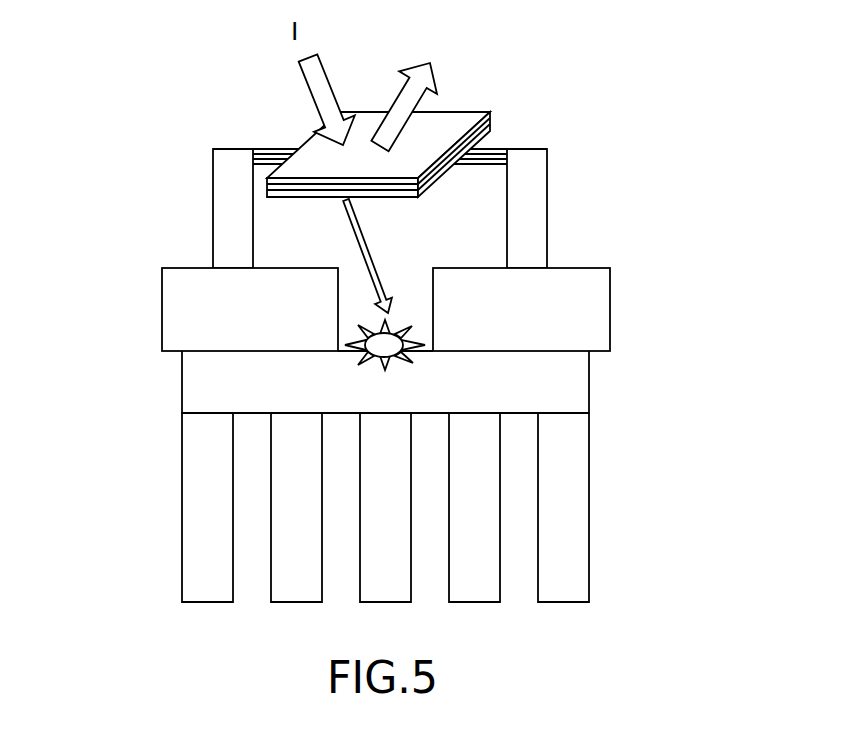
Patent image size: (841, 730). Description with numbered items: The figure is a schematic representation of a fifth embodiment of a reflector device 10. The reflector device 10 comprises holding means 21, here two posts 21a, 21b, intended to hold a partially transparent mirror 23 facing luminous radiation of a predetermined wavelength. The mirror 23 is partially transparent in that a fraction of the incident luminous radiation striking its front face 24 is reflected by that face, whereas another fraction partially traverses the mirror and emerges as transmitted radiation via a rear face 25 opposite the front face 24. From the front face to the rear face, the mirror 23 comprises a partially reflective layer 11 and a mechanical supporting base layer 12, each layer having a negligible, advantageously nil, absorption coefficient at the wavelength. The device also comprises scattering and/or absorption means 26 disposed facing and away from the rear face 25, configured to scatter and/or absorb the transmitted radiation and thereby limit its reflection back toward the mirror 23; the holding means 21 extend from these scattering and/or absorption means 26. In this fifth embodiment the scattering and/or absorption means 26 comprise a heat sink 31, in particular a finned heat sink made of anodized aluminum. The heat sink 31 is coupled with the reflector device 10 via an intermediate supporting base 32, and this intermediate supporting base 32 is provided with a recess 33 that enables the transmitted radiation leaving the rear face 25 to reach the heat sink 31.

The reflector device 10 is at (98, 118).
The partially reflective layer 11 is at (367, 118).
The mechanical supporting base layer 12 is at (407, 195).
The holding means 21 is at (378, 208).
The post 21a is at (223, 253).
The post 21b is at (535, 255).
The partially transparent mirror 23 is at (318, 144).
The front face 24 is at (350, 133).
The rear face 25 is at (418, 194).
The scattering and/or absorption means 26 is at (195, 382).
The heat sink 31 is at (195, 471).
The intermediate supporting base 32 is at (177, 322).
The recess 33 is at (357, 296).